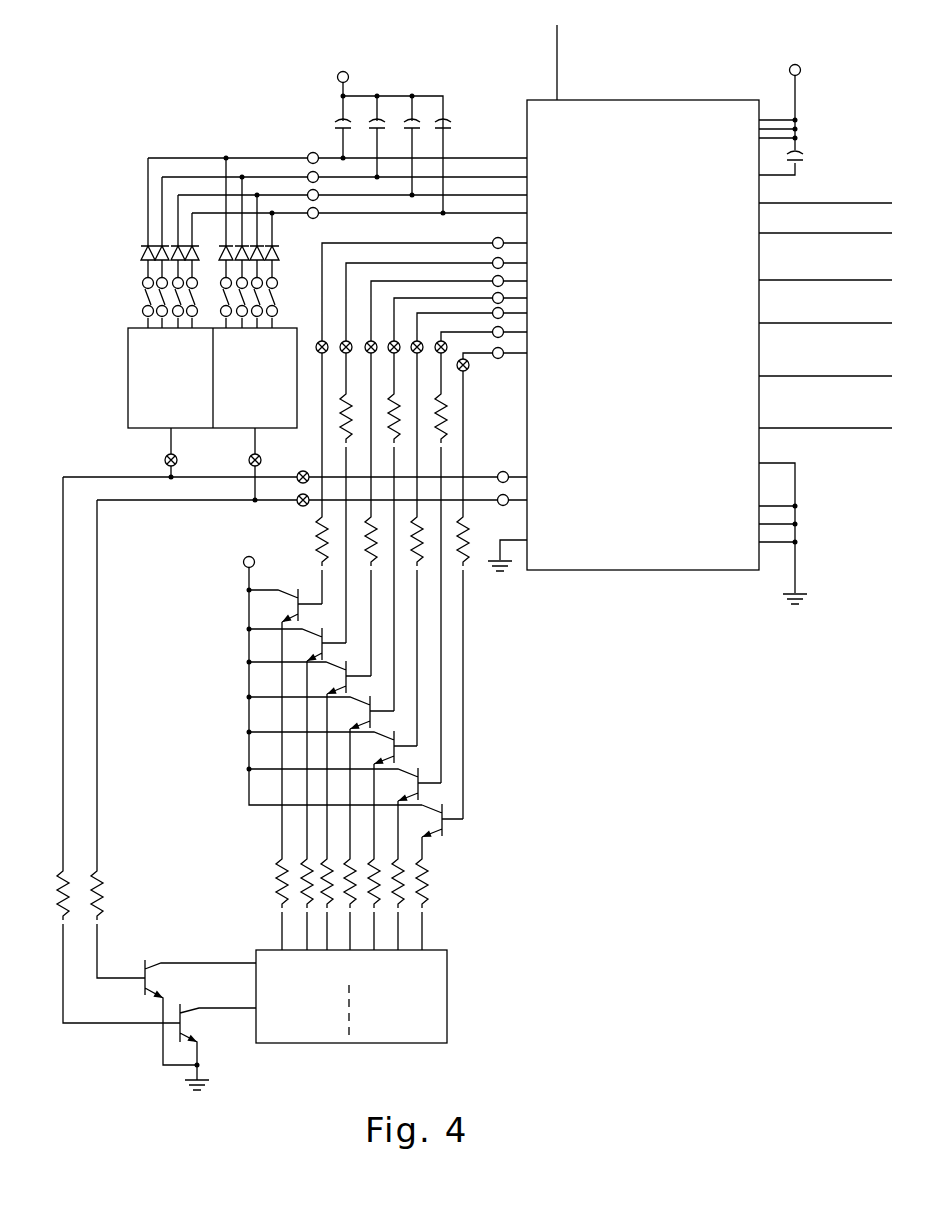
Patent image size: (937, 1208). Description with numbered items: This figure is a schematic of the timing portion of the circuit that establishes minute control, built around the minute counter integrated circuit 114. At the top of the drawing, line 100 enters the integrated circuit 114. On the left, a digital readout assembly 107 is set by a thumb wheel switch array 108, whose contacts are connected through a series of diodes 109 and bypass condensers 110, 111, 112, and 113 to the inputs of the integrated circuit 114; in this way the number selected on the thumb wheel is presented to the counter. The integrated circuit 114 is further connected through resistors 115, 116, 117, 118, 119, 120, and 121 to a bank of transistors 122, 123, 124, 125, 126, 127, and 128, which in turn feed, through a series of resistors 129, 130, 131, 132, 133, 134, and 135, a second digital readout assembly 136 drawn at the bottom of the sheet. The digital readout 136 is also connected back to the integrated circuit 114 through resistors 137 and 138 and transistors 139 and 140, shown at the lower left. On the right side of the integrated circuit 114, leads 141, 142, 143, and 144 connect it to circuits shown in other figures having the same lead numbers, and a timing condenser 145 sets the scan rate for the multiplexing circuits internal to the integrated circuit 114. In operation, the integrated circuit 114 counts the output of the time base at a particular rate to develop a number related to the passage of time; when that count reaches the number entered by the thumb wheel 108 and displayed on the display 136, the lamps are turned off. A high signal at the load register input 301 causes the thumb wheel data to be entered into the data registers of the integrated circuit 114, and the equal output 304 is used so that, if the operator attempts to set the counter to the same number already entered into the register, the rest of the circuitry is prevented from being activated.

The supply input line 100 is at (557, 45).
The minute counter integrated circuit 114 is at (665, 106).
The digital readout assembly 107 is at (128, 385).
The thumb wheel switch array 108 is at (138, 302).
The diodes 109 is at (138, 253).
The bypass condenser 110 is at (336, 121).
The bypass condenser 111 is at (371, 121).
The bypass condenser 112 is at (409, 121).
The bypass condenser 113 is at (445, 123).
The resistor 115 is at (350, 408).
The resistor 116 is at (398, 408).
The resistor 117 is at (445, 408).
The resistor 118 is at (316, 535).
The resistor 119 is at (369, 560).
The resistor 120 is at (416, 560).
The resistor 121 is at (469, 548).
The transistor 122 is at (302, 600).
The transistor 123 is at (329, 638).
The transistor 124 is at (353, 673).
The transistor 125 is at (377, 708).
The transistor 126 is at (400, 743).
The transistor 127 is at (424, 780).
The transistor 128 is at (449, 816).
The resistor 129 is at (275, 898).
The resistor 130 is at (304, 865).
The resistor 131 is at (327, 902).
The resistor 132 is at (347, 865).
The resistor 133 is at (375, 902).
The resistor 134 is at (394, 865).
The resistor 135 is at (427, 888).
The digital readout assembly 136 is at (313, 1043).
The resistor 137 is at (56, 898).
The resistor 138 is at (118, 888).
The transistor 139 is at (145, 969).
The transistor 140 is at (189, 1018).
The lead 141 is at (876, 203).
The lead 142 is at (876, 233).
The lead 143 is at (876, 280).
The lead 144 is at (876, 428).
The timing condenser 145 is at (803, 160).
The load register input 301 is at (876, 323).
The equal output 304 is at (878, 376).